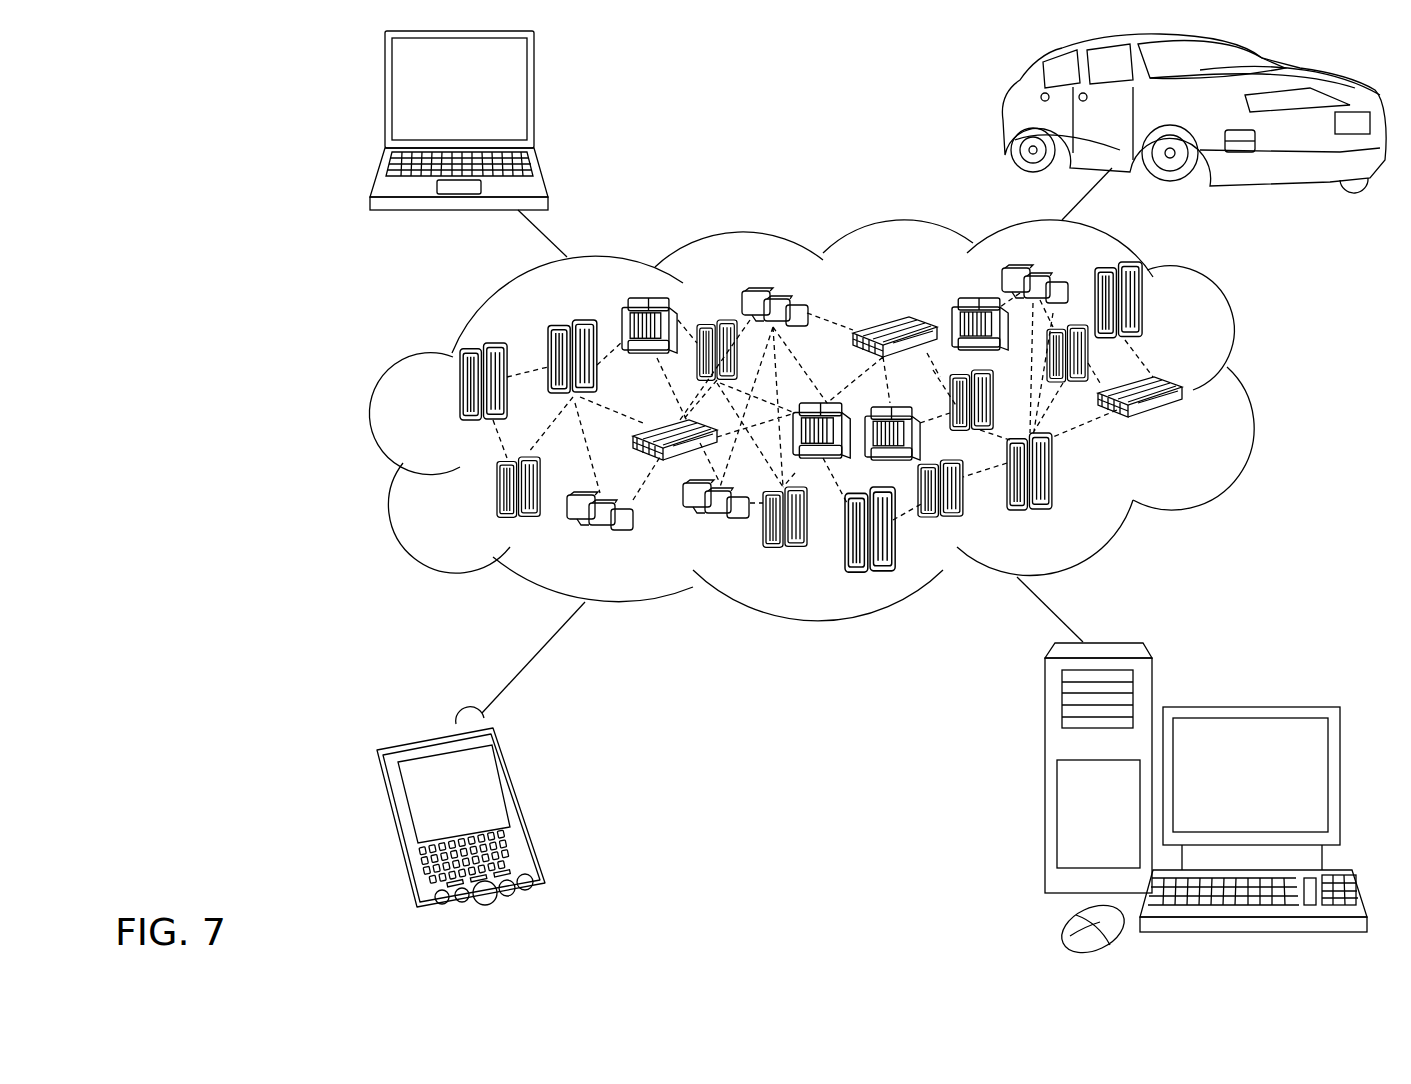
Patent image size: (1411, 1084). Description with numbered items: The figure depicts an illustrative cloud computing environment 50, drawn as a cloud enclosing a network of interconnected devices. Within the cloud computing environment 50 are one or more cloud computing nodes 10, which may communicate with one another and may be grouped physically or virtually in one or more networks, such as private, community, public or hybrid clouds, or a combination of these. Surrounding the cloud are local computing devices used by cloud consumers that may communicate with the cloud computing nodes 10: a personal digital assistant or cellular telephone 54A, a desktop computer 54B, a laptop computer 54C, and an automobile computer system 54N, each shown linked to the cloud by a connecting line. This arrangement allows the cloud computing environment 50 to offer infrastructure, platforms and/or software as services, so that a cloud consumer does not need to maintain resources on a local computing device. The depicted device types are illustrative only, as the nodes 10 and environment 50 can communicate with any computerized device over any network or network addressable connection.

The cloud computing environment 50 is at (1250, 393).
The cloud computing nodes 10 is at (1190, 426).
The personal digital assistant or cellular telephone 54A is at (527, 807).
The desktop computer 54B is at (1247, 702).
The laptop computer 54C is at (535, 97).
The automobile computer system 54N is at (1013, 112).